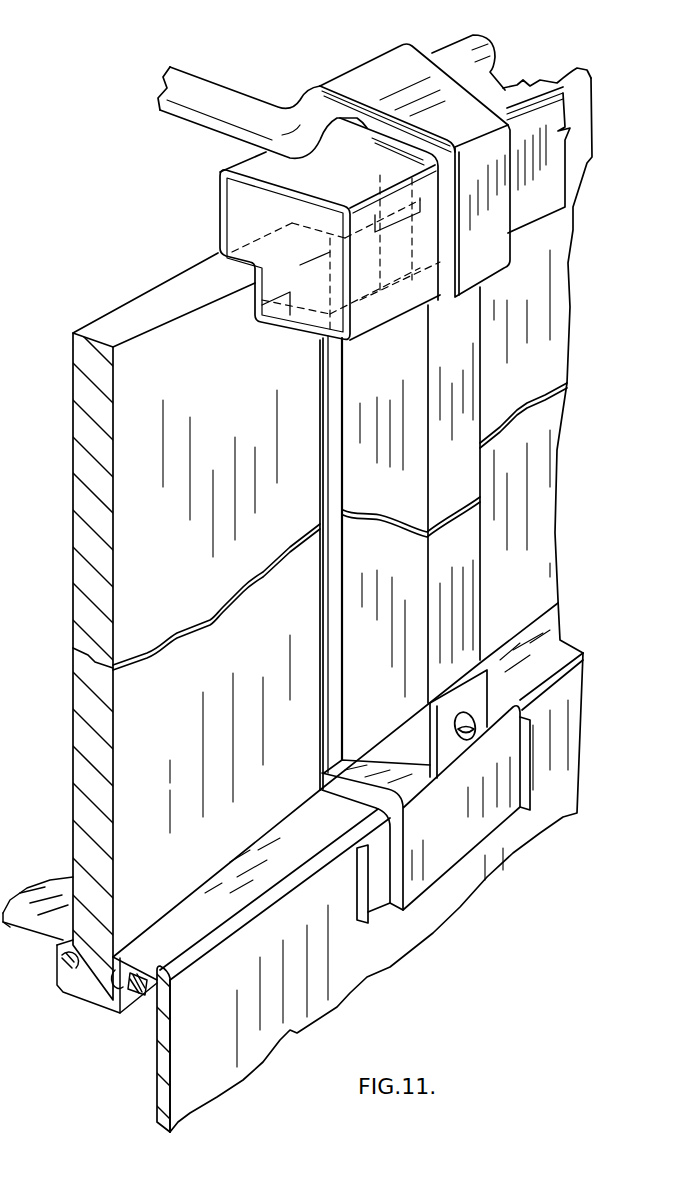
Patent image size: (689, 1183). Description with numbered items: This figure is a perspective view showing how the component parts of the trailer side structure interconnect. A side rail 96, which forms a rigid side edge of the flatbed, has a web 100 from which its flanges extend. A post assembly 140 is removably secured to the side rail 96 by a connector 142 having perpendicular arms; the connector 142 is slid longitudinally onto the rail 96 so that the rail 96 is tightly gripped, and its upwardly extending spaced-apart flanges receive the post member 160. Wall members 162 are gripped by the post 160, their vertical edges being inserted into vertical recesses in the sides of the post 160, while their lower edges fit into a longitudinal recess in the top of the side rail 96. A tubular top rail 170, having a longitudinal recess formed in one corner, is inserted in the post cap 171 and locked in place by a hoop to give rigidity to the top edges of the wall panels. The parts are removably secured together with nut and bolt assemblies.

The side rail 96 is at (335, 990).
The web 100 is at (157, 1062).
The post assembly 140 is at (500, 564).
The connector 142 is at (487, 803).
The post member 160 is at (443, 350).
The wall member 162 is at (285, 619).
The tubular top rail 170 is at (217, 190).
The post cap 171 is at (424, 70).